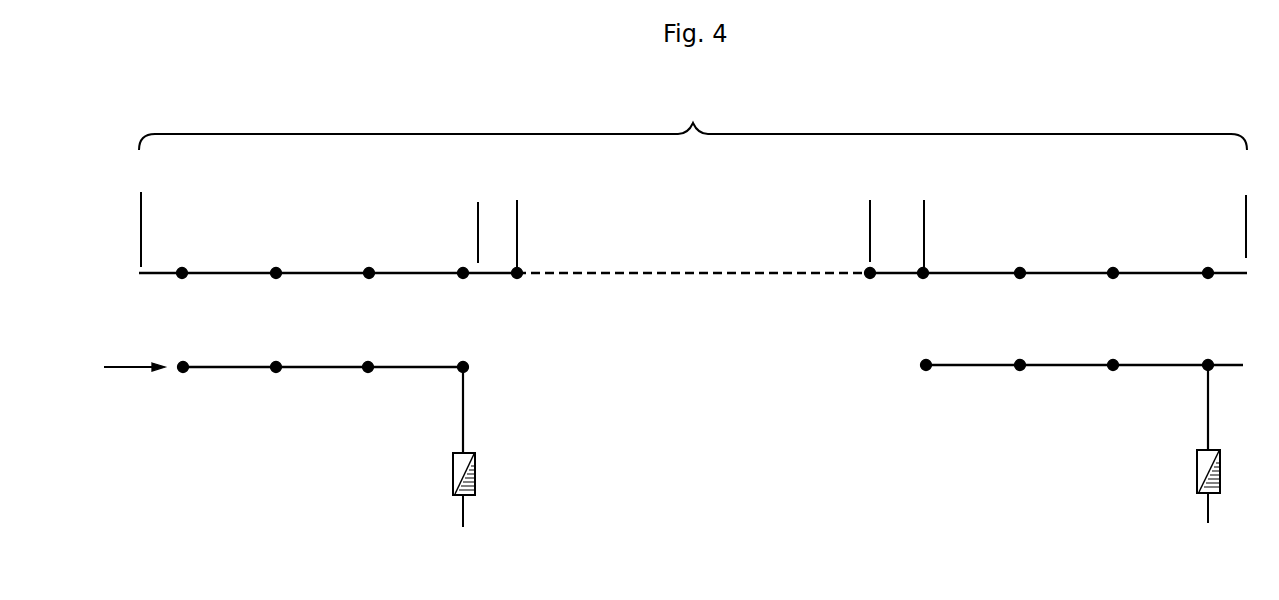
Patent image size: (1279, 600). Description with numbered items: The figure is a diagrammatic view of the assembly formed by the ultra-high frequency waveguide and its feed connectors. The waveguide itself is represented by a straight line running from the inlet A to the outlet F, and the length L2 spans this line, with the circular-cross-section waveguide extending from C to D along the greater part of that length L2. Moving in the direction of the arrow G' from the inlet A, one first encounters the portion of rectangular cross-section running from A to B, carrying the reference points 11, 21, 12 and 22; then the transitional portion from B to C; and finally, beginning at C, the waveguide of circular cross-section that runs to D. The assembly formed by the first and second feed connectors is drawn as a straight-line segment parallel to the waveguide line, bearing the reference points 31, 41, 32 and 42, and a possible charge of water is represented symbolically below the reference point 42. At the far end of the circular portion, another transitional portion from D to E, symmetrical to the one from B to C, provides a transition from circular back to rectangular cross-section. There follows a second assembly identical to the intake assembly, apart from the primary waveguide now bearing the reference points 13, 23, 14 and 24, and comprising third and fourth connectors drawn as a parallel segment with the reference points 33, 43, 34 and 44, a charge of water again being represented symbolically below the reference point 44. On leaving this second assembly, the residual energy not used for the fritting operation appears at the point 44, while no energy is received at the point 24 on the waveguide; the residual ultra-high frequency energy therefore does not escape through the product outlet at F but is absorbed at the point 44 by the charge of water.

The reference point 1_1 11 is at (184, 288).
The reference point 2_1 21 is at (276, 288).
The reference point 1_2 12 is at (370, 288).
The reference point 2_2 22 is at (463, 288).
The reference point 1_3 13 is at (923, 288).
The reference point 2_3 23 is at (1020, 288).
The reference point 1_4 14 is at (1113, 288).
The reference point 2_4 24 is at (1208, 288).
The reference point 3_1 31 is at (184, 382).
The reference point 4_1 41 is at (277, 382).
The reference point 3_2 32 is at (370, 382).
The reference point 4_2 42 is at (470, 445).
The reference point 3_3 33 is at (927, 380).
The reference point 4_3 43 is at (1021, 380).
The reference point 3_4 34 is at (1114, 380).
The reference point 4_4 44 is at (1214, 442).
The inlet A is at (128, 229).
The point B is at (469, 232).
The point C is at (523, 239).
The point D is at (864, 239).
The point E is at (931, 236).
The point F is at (1253, 226).
The arrow G' is at (134, 357).
The length L_2 L2 is at (421, 124).